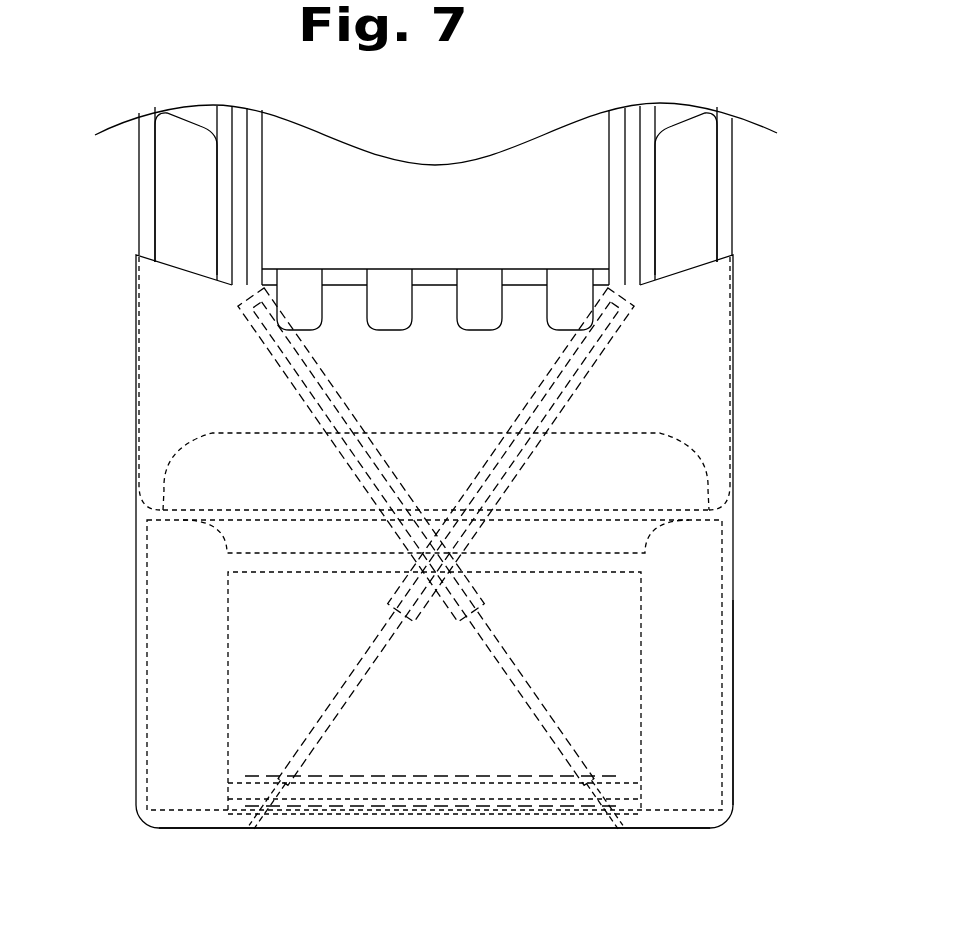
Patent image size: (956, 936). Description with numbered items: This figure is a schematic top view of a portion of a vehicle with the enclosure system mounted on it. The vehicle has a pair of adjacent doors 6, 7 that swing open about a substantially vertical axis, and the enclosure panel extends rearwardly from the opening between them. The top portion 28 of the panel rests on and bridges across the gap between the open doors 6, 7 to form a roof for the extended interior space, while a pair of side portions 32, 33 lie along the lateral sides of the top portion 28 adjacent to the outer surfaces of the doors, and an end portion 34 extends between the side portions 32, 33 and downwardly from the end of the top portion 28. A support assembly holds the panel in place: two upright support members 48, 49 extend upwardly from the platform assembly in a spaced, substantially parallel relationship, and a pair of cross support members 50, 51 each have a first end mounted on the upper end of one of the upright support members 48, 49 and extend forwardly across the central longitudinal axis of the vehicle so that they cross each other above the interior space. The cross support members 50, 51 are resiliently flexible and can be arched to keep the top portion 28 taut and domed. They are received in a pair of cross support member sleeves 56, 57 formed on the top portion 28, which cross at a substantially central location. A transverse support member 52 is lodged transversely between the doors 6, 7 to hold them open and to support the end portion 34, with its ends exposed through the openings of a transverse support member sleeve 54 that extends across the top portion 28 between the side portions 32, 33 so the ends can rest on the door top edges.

The door 6 is at (168, 715).
The door 7 is at (700, 678).
The top portion 28 is at (695, 583).
The side portion 32 is at (175, 628).
The side portion 33 is at (734, 768).
The end portion 34 is at (557, 828).
The upright support member 48 is at (253, 827).
The upright support member 49 is at (620, 827).
The cross support member 50 is at (297, 757).
The cross support member 51 is at (565, 750).
The transverse support member 52 is at (418, 792).
The transverse support member sleeve 54 is at (388, 772).
The cross support member sleeve 56 is at (393, 593).
The cross support member sleeve 57 is at (478, 598).